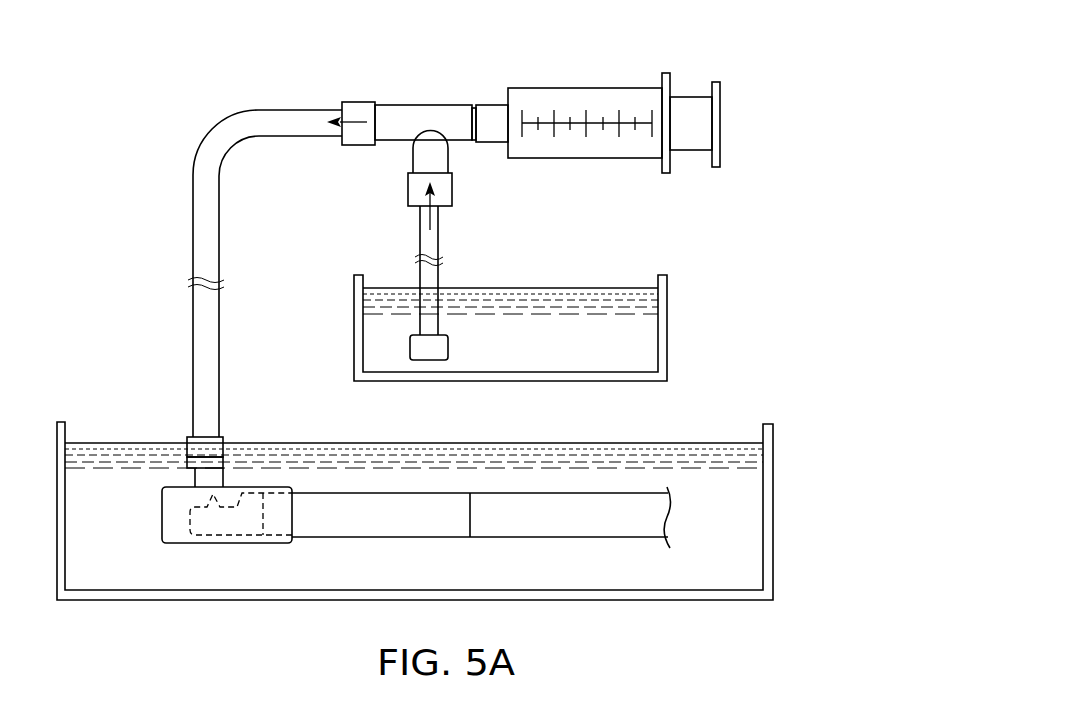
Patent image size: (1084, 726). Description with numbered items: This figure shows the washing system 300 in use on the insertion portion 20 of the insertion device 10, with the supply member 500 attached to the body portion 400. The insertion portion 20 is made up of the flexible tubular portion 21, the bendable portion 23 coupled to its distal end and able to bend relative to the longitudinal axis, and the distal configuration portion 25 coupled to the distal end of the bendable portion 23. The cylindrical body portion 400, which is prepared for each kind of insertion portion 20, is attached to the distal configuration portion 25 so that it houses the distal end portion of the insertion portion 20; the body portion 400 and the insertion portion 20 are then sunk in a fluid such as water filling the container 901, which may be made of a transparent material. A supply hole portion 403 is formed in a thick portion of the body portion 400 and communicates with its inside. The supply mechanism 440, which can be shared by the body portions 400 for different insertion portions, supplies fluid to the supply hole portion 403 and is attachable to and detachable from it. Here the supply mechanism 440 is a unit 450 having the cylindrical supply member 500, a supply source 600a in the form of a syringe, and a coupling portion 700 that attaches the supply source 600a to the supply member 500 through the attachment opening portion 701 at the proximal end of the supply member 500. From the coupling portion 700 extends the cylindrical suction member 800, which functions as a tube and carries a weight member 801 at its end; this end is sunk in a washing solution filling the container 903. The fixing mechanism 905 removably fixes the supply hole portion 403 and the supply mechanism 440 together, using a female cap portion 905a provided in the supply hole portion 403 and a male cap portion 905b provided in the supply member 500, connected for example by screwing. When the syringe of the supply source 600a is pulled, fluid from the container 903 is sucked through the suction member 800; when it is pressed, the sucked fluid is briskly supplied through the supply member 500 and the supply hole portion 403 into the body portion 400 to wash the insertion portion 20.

The insertion device 10 is at (376, 506).
The insertion portion 20 is at (481, 464).
The flexible tubular portion 21 is at (552, 480).
The bendable portion 23 is at (395, 508).
The distal configuration portion 25 is at (260, 517).
The washing system 300 is at (219, 234).
The body portion 400 is at (217, 475).
The supply hole portion 403 is at (217, 480).
The supply mechanism 440 is at (165, 140).
The unit 450 is at (532, 76).
The supply member 500 is at (180, 243).
The supply source 600a is at (632, 76).
The coupling portion 700 is at (413, 122).
The attachment opening portion 701 is at (474, 104).
The suction member 800 is at (464, 283).
The weight member 801 is at (448, 350).
The container 901 is at (773, 452).
The container 903 is at (667, 338).
The fixing mechanism 905 is at (214, 415).
The female cap portion 905a is at (208, 462).
The male cap portion 905b is at (203, 440).